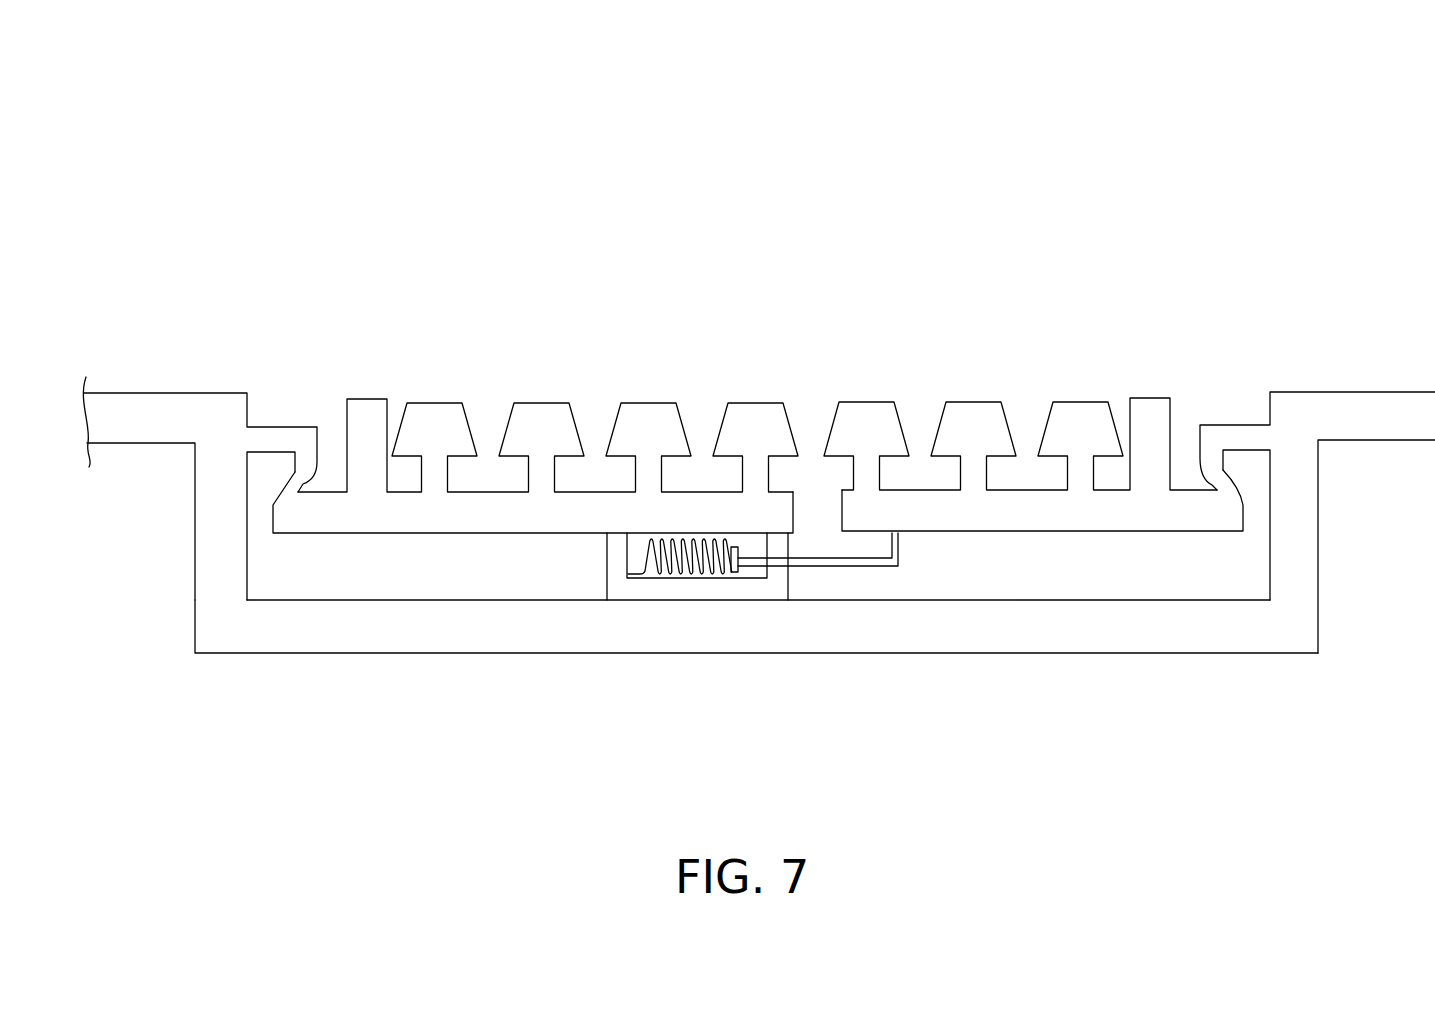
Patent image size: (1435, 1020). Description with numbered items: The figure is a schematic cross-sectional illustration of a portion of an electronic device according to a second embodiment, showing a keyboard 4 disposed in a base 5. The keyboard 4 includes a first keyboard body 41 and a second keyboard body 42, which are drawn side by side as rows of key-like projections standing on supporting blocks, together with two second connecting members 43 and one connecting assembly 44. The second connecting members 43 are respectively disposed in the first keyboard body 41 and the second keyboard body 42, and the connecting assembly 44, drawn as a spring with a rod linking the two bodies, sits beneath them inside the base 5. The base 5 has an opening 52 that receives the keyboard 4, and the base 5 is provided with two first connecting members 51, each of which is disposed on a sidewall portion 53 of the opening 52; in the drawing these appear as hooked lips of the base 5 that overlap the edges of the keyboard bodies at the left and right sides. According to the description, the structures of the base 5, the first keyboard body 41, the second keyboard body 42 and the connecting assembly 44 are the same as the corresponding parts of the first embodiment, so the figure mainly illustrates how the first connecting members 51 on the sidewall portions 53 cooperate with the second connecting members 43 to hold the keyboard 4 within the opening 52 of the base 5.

The keyboard 4 is at (252, 30).
The first keyboard body 41 is at (548, 395).
The second keyboard body 42 is at (976, 388).
The second connecting member 43 is at (287, 518).
The connecting assembly 44 is at (804, 581).
The base 5 is at (1283, 660).
The first connecting member 51 is at (288, 432).
The opening 52 is at (1040, 568).
The sidewall portion 53 is at (1263, 573).